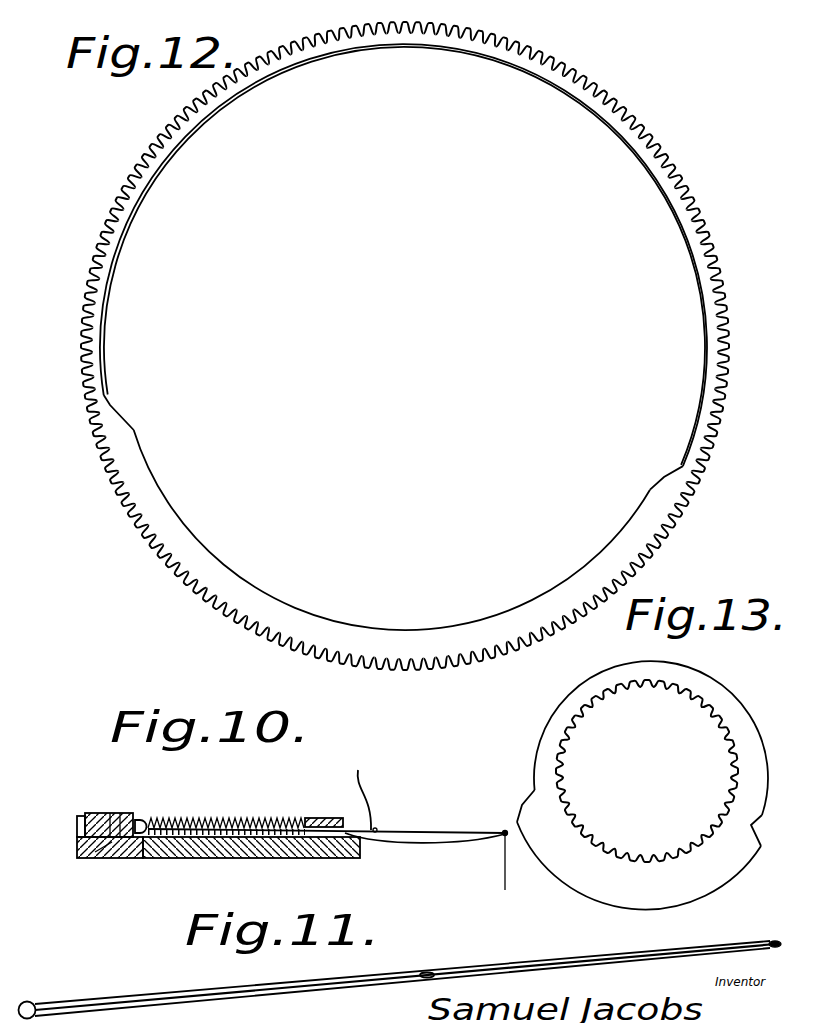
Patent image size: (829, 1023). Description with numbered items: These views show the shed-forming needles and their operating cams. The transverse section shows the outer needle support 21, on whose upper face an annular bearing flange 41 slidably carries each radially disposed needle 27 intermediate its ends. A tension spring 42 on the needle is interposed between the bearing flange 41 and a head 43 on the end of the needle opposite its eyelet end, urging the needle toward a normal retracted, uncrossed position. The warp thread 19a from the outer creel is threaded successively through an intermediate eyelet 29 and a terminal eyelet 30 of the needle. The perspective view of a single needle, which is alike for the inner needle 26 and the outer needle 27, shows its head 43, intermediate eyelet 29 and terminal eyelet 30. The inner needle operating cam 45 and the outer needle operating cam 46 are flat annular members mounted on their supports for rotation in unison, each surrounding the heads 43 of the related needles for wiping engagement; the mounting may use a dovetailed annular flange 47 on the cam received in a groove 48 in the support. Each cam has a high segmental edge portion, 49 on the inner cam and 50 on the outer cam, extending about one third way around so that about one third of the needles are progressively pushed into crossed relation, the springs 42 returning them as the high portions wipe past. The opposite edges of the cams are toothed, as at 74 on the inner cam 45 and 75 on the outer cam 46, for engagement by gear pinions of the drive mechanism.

In FIG. 12, the teeth 75 is at (160, 562).
In FIG. 10, the teeth 75 is at (80, 817).
In FIG. 12, the outer needle operating cam 46 is at (662, 195).
In FIG. 12, the high segmental edge portion 50 is at (398, 630).
In FIG. 10, the high segmental edge portion 50 is at (125, 813).
In FIG. 13, the inner needle operating cam 45 is at (592, 680).
In FIG. 13, the teeth 74 is at (572, 820).
In FIG. 13, the high segmental edge portion 49 is at (645, 910).
In FIG. 10, the dovetailed annular groove 48 is at (77, 846).
In FIG. 10, the dovetailed annular flange 47 is at (100, 850).
In FIG. 10, the head 43 is at (146, 822).
In FIG. 11, the head 43 is at (33, 1002).
In FIG. 10, the tension spring 42 is at (240, 818).
In FIG. 10, the bearing flange 41 is at (322, 818).
In FIG. 10, the outer needle support 21 is at (332, 859).
In FIG. 10, the thread 19a is at (372, 781).
In FIG. 10, the intermediate eyelet 29 is at (378, 828).
In FIG. 11, the intermediate eyelet 29 is at (433, 972).
In FIG. 10, the needle 27 is at (437, 828).
In FIG. 10, the terminal eyelet 30 is at (505, 829).
In FIG. 11, the terminal eyelet 30 is at (772, 940).
In FIG. 11, the needle 26 is at (543, 963).